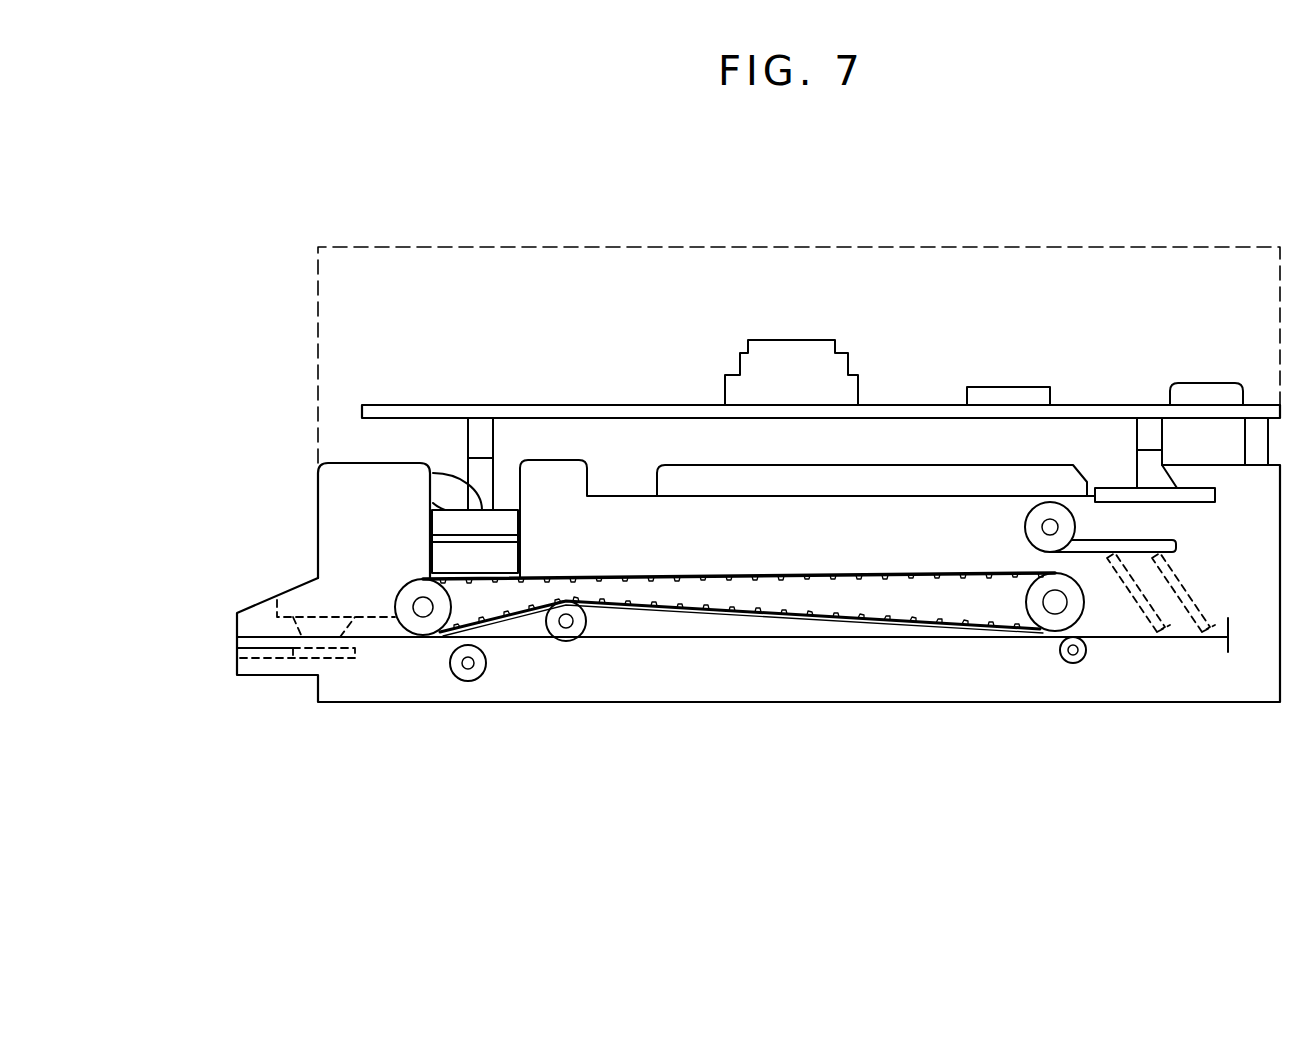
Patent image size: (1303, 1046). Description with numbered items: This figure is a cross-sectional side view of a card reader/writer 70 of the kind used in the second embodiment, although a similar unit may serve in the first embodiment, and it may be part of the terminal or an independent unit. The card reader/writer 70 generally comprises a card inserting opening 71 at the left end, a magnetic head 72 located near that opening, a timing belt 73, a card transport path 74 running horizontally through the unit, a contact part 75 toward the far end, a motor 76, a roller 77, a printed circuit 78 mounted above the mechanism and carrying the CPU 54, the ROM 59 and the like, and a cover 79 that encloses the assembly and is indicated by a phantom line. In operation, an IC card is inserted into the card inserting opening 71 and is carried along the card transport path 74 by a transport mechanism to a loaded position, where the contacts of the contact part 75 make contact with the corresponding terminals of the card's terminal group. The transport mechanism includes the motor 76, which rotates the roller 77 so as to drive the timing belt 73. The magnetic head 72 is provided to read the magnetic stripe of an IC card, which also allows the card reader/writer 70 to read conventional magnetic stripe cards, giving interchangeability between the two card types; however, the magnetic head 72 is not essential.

The card reader/writer 70 is at (832, 157).
The cover 79 is at (882, 243).
The printed circuit 78 is at (512, 404).
The ROM 59 is at (858, 377).
The CPU 54 is at (1005, 370).
The motor 76 is at (445, 476).
The timing belt 73 is at (648, 577).
The roller 77 is at (405, 588).
The card transport path 74 is at (743, 638).
The card inserting opening 71 is at (237, 649).
The magnetic head 72 is at (317, 635).
The contact part 75 is at (1182, 607).